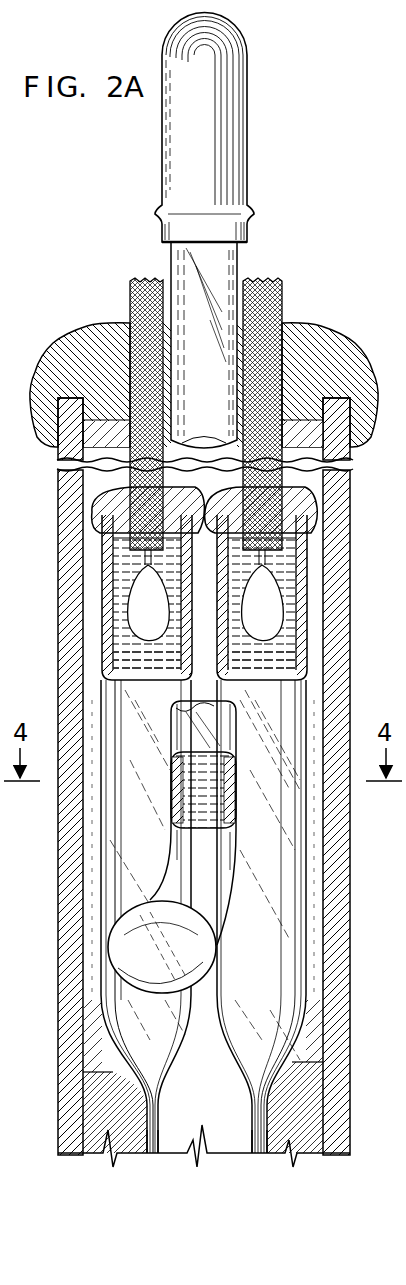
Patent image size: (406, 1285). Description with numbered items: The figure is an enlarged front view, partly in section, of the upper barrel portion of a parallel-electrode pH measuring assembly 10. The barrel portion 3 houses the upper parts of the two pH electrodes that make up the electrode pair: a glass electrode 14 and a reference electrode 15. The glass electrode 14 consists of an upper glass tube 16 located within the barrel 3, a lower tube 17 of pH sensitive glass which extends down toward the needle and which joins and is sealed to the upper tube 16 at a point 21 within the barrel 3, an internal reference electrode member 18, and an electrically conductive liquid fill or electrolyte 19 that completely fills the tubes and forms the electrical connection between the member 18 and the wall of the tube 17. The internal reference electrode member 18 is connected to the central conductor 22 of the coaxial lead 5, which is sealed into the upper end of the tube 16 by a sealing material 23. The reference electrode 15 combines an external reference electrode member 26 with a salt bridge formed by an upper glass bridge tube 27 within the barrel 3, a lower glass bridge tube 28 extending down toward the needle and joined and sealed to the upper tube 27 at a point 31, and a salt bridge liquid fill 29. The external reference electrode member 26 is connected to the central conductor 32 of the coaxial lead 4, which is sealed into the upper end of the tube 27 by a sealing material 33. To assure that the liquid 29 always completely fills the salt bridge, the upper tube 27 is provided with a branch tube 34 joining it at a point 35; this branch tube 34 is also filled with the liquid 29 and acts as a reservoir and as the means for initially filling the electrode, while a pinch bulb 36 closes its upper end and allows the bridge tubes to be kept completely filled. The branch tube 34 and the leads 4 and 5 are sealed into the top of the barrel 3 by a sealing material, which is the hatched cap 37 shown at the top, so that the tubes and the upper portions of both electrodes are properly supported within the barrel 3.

The barrel portion 3 is at (335, 833).
The coaxial lead 4 is at (140, 298).
The coaxial lead 5 is at (265, 302).
The electrode assembly 10 is at (400, 160).
The glass electrode 14 is at (313, 760).
The reference electrode 15 is at (97, 755).
The upper glass tube 16 is at (265, 903).
The lower tube of pH sensitive glass 17 is at (260, 1128).
The internal reference electrode member 18 is at (255, 600).
The electrically conductive liquid fill 19 is at (275, 655).
The joining point 21 is at (282, 1063).
The central conductor 22 is at (270, 558).
The sealing material 23 is at (312, 500).
The external reference electrode member 26 is at (140, 598).
The upper glass bridge tube 27 is at (130, 833).
The lower glass bridge tube 28 is at (148, 1125).
The salt bridge liquid fill 29 is at (143, 658).
The joining point 31 is at (130, 1073).
The central conductor 32 is at (145, 558).
The sealing material 33 is at (110, 500).
The branch tube 34 is at (205, 262).
The branch joining point 35 is at (110, 948).
The pinch bulb 36 is at (183, 131).
The cap 37 is at (72, 345).